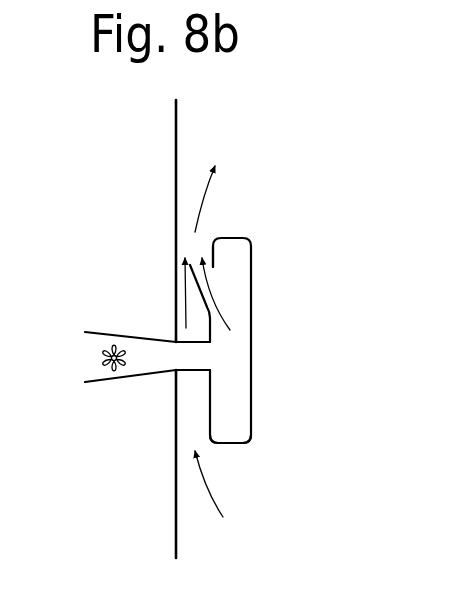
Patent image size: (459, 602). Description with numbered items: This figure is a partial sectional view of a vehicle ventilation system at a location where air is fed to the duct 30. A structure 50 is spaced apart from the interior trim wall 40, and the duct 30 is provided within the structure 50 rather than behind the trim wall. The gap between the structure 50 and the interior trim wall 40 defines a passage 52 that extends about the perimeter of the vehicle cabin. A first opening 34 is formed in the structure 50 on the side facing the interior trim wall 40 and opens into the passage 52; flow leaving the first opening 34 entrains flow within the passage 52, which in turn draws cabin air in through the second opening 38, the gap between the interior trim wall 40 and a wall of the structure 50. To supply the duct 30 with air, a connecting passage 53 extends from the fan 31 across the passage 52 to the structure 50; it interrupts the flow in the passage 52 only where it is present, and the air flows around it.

The duct 30 is at (230, 425).
The fan 31 is at (100, 360).
The first opening 34 is at (210, 275).
The second opening 38 is at (202, 443).
The interior trim wall 40 is at (175, 534).
The structure 50 is at (251, 365).
The passage 52 is at (188, 331).
The connecting passage 53 is at (197, 357).